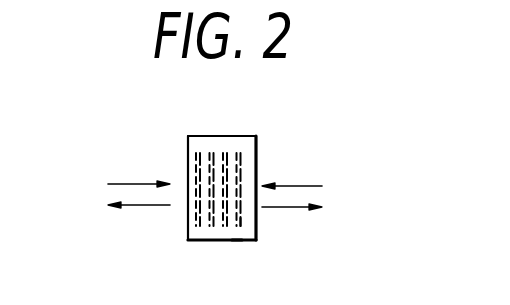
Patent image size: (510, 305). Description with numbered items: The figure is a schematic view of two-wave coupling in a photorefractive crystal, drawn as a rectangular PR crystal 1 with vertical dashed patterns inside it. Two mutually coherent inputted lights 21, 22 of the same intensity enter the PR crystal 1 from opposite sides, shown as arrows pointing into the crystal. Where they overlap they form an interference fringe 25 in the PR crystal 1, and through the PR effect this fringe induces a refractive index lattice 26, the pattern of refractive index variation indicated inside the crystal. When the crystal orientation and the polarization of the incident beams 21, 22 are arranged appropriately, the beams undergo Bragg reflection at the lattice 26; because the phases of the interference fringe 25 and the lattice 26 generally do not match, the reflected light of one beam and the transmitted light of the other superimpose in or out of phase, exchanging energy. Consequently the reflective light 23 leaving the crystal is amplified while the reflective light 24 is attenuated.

The PR crystal 1 is at (257, 138).
The inputted light 21 is at (121, 182).
The inputted light 22 is at (309, 185).
The reflective light 23 is at (121, 209).
The reflective light 24 is at (309, 213).
The interference fringe pattern 25 is at (237, 240).
The lattice pattern 26 is at (237, 240).